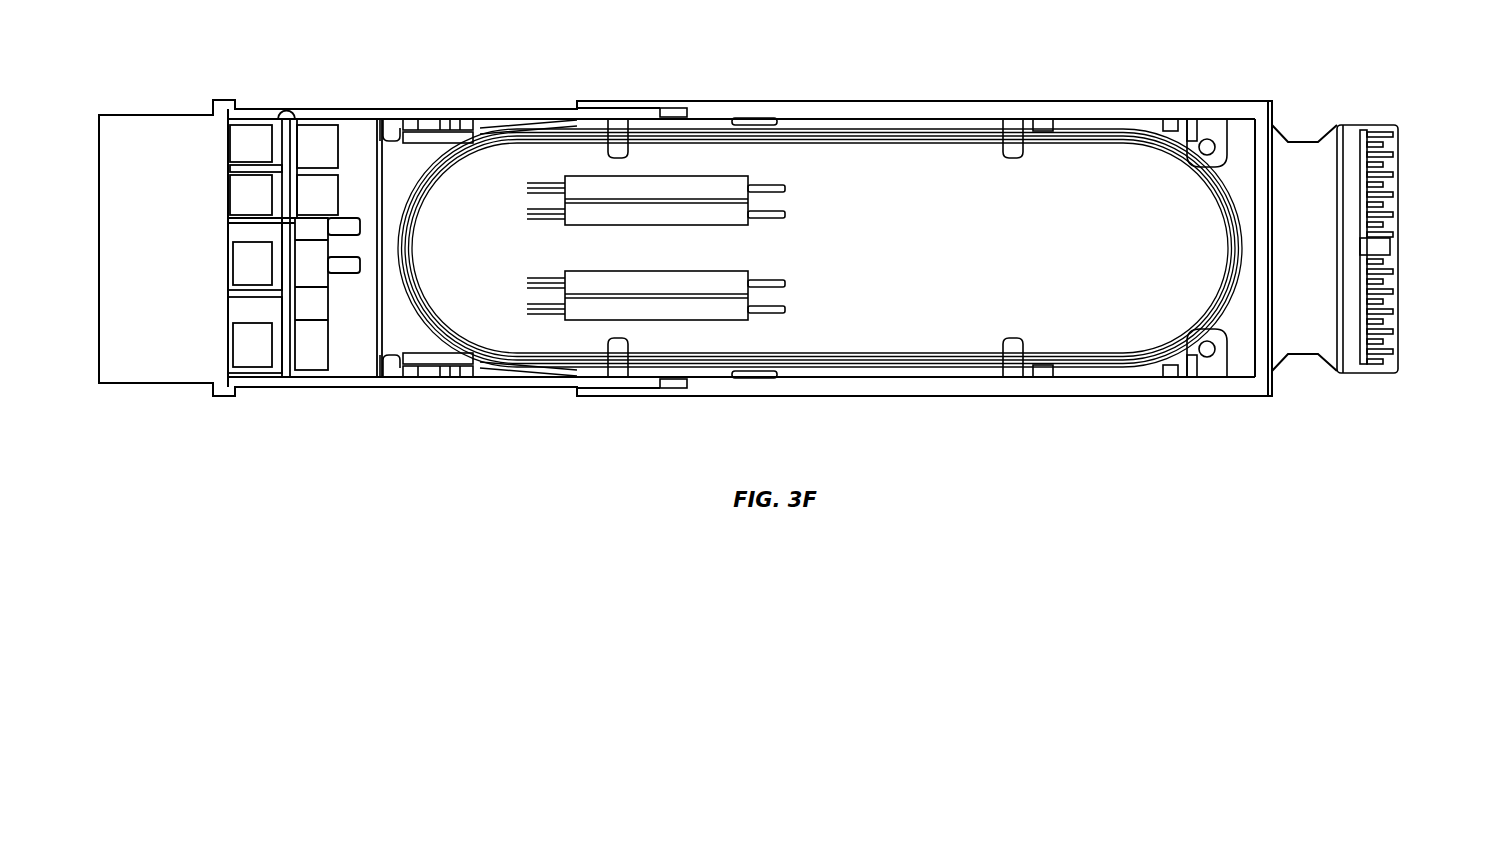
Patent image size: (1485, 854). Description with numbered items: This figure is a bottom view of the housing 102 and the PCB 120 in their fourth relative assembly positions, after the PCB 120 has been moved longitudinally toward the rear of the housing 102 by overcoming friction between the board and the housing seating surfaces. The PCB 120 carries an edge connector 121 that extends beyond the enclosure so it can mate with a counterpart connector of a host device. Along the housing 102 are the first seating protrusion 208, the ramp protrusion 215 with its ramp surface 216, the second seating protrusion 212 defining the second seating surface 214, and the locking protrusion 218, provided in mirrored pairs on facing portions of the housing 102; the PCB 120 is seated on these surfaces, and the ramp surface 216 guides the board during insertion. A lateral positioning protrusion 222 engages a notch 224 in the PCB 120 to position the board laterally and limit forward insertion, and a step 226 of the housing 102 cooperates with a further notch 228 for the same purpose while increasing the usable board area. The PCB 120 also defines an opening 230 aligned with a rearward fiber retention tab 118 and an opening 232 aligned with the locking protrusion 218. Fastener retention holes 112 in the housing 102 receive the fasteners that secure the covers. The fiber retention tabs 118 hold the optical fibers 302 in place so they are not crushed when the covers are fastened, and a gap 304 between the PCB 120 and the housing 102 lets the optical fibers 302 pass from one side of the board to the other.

The housing 102 is at (870, 101).
The fastener retention holes 112 is at (1216, 140).
The fiber retention tabs 118 is at (618, 150).
The PCB 120 is at (884, 262).
The edge connector 121 is at (1413, 140).
The first seating protrusion 208 is at (392, 127).
The second seating protrusion 212 is at (460, 127).
The second seating surface 214 is at (507, 127).
The ramp protrusion 215 is at (443, 127).
The ramp surface 216 is at (410, 127).
The locking protrusion 218 is at (1170, 118).
The lateral positioning protrusion 222 is at (573, 127).
The notch 224 is at (583, 378).
The step 226 is at (648, 108).
The notch 228 is at (752, 118).
The opening 230 is at (1046, 114).
The opening 232 is at (1205, 114).
The optical fibers 302 is at (860, 368).
The gap 304 is at (353, 160).